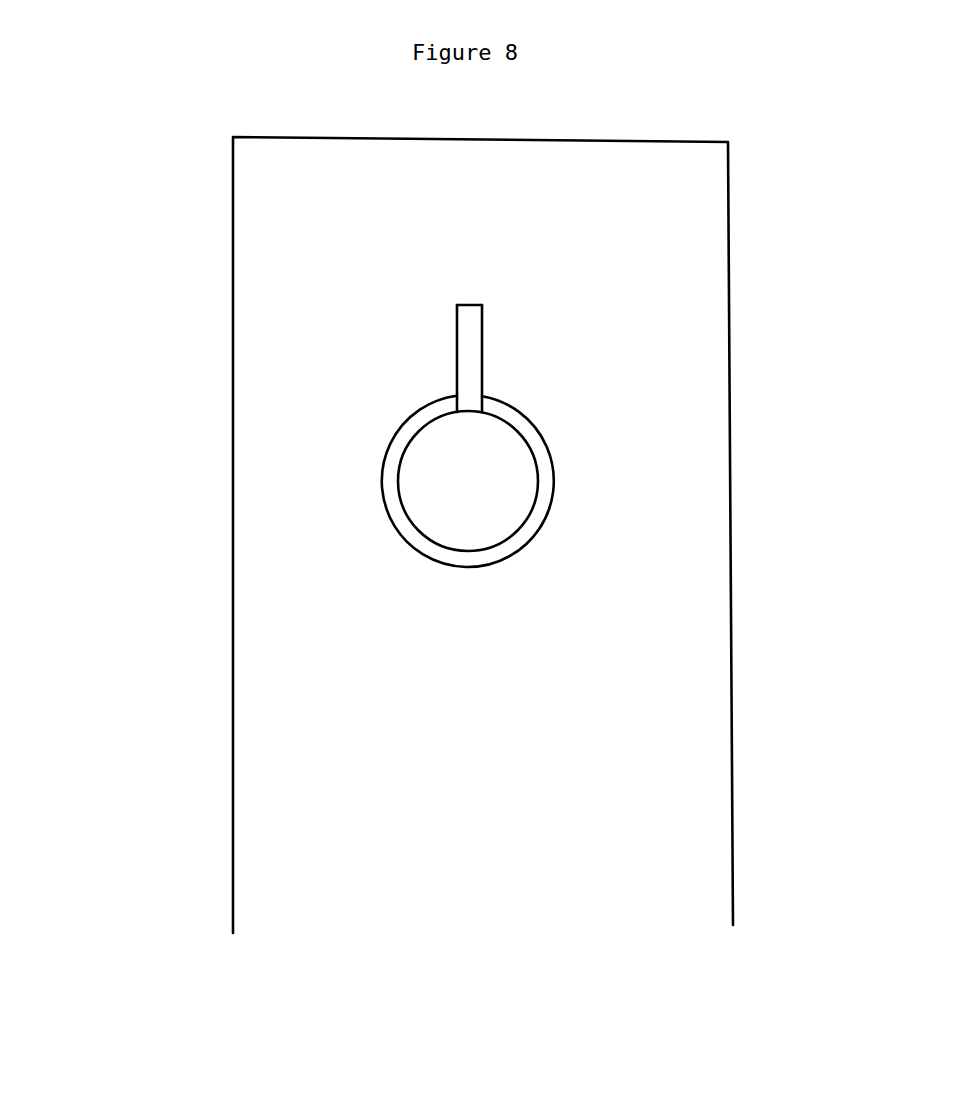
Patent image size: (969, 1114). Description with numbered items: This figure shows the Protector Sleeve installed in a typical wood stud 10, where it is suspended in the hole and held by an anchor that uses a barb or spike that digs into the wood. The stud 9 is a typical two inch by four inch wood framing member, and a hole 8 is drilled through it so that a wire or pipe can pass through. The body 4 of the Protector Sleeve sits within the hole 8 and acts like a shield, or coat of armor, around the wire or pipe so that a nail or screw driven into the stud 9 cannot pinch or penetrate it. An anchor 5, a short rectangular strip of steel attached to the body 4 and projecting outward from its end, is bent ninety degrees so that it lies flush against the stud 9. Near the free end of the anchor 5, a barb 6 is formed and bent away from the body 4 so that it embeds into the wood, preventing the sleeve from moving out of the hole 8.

The Protector Sleeve installed in wood stud 10 is at (183, 180).
The wood stud 9 is at (322, 645).
The body 4 is at (538, 473).
The hole 8 is at (523, 545).
The anchor 5 is at (470, 370).
The barb 6 is at (456, 333).